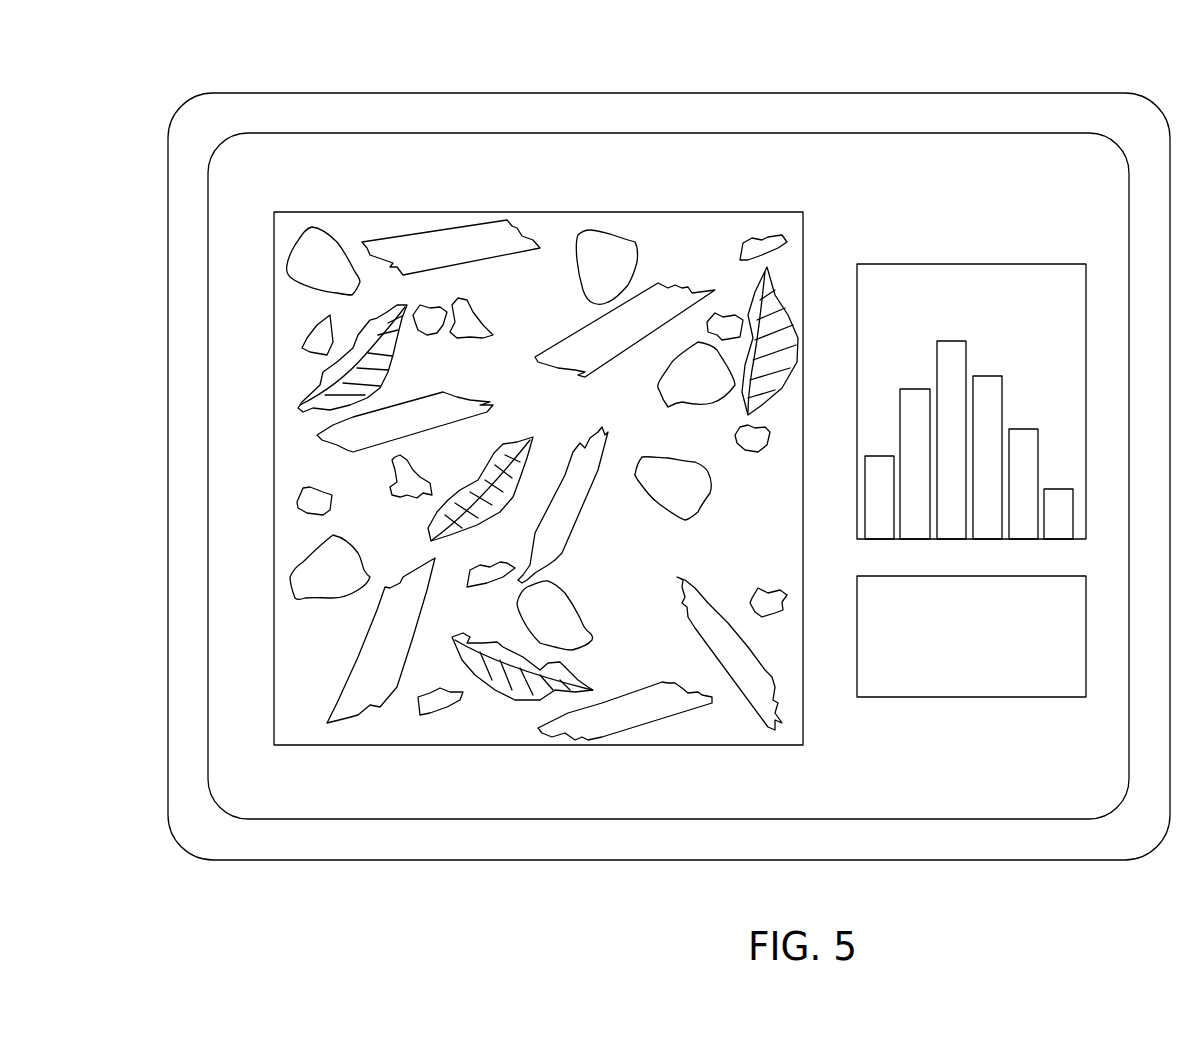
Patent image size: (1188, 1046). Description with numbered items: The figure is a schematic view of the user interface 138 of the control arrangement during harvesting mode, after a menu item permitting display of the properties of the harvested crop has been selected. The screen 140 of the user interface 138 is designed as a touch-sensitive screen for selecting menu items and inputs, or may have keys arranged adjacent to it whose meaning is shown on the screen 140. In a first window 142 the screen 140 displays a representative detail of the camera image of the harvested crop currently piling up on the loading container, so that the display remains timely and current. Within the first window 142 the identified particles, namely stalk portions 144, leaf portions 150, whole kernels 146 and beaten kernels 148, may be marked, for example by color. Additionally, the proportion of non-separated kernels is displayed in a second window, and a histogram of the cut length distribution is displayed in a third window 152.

The user interface 138 is at (627, 884).
The screen 140 is at (408, 780).
The first window 142 is at (630, 223).
The stalk portions 144 is at (668, 302).
The whole kernels 146 is at (598, 258).
The beaten kernels 148 is at (395, 473).
The leaf portions 150 is at (333, 392).
The third window 152 is at (947, 264).